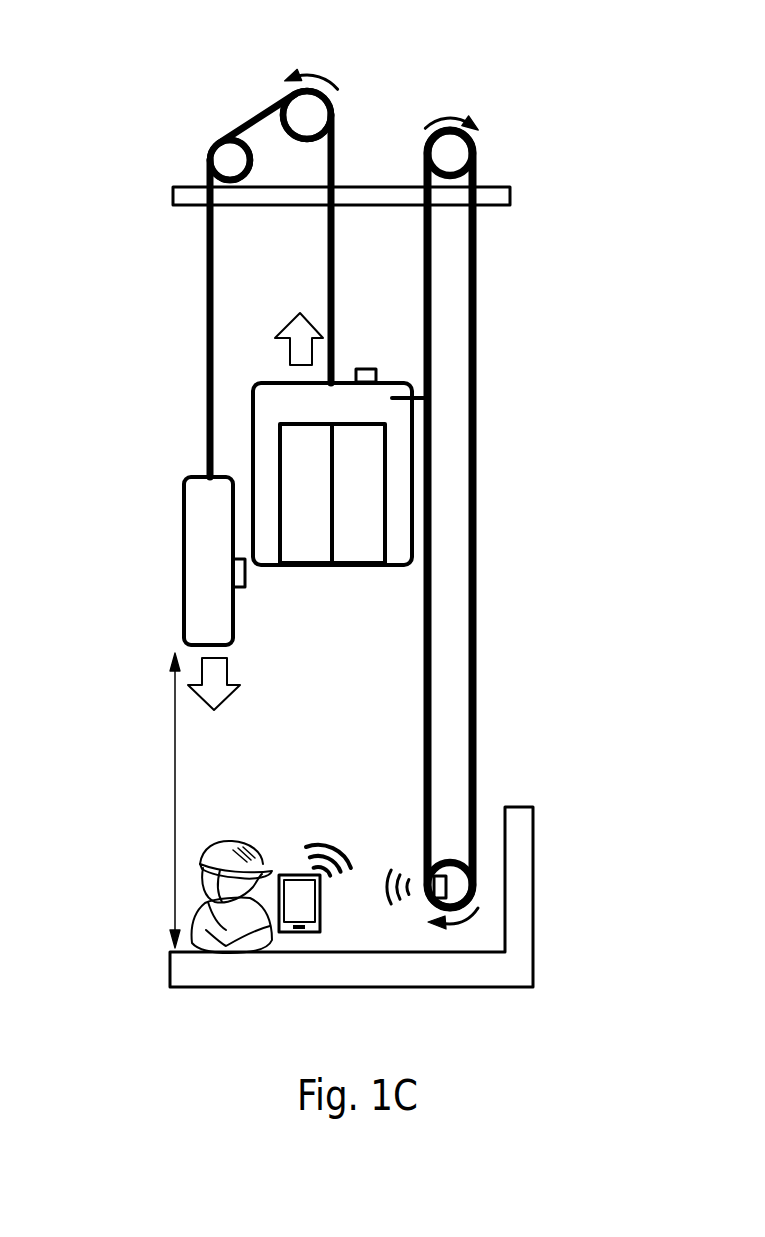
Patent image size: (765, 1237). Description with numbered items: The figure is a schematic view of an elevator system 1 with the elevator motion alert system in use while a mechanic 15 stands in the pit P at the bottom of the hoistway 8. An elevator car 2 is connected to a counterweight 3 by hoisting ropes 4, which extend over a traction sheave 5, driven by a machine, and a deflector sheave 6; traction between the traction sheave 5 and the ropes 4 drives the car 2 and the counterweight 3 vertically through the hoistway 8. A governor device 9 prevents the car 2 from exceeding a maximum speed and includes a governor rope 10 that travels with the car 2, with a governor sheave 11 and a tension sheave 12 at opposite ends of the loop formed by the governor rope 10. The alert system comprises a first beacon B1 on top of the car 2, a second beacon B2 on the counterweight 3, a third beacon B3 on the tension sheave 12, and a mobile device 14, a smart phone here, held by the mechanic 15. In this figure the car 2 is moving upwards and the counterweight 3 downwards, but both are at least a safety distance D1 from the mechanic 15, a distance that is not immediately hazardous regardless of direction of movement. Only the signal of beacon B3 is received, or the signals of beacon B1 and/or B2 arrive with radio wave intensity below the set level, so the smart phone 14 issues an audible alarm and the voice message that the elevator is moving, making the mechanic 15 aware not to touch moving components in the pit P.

The elevator system 1 is at (519, 96).
The elevator car 2 is at (413, 453).
The counterweight 3 is at (184, 553).
The hoisting ropes 4 is at (206, 272).
The traction sheave 5 is at (335, 106).
The deflector sheave 6 is at (208, 152).
The hoistway 8 is at (170, 440).
The governor device 9 is at (486, 650).
The governor rope 10 is at (476, 513).
The governor sheave 11 is at (475, 145).
The tension sheave 12 is at (474, 893).
The mobile device 14 is at (287, 875).
The mechanic 15 is at (210, 845).
The first beacon B1 is at (367, 368).
The second beacon B2 is at (246, 578).
The third beacon B3 is at (446, 880).
The pit P is at (170, 968).
The safety distance D1 is at (159, 800).